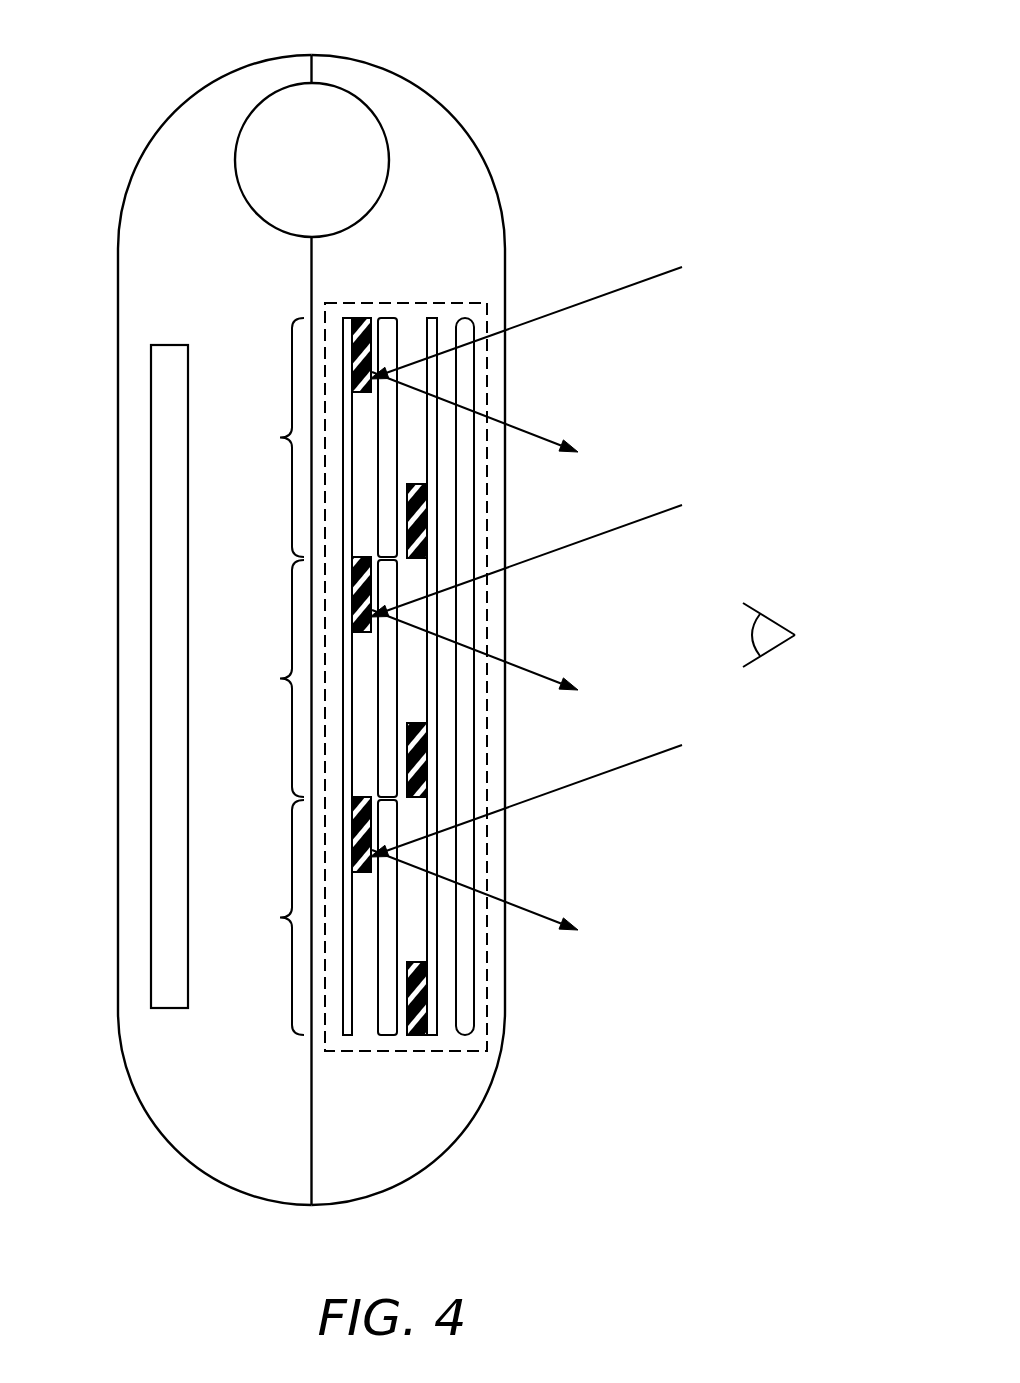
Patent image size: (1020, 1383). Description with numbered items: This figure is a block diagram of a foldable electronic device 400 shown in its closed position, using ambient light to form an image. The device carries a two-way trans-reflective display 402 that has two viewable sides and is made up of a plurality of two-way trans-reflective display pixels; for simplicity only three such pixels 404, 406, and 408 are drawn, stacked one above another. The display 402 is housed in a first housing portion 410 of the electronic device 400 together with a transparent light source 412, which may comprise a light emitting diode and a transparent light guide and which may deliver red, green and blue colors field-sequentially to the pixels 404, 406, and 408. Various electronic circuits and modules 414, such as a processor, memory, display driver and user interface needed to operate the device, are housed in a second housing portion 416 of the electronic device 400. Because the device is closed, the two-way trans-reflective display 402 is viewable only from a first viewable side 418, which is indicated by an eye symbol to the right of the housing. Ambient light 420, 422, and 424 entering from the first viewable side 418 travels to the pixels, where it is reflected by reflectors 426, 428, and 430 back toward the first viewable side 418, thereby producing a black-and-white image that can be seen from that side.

The electronic device 400 is at (641, 27).
The two-way trans-reflective display 402 is at (346, 304).
The two-way trans-reflective display pixel 404 is at (281, 438).
The two-way trans-reflective display pixel 406 is at (281, 678).
The two-way trans-reflective display pixel 408 is at (281, 918).
The first housing portion 410 is at (445, 1157).
The transparent light source 412 is at (467, 317).
The electronic circuits and modules 414 is at (170, 345).
The second housing portion 416 is at (172, 1157).
The first viewable side 418 is at (773, 617).
The ambient light 420 is at (628, 285).
The ambient light 422 is at (533, 597).
The ambient light 424 is at (533, 837).
The reflector 426 is at (371, 347).
The reflector 428 is at (368, 595).
The reflector 430 is at (368, 834).